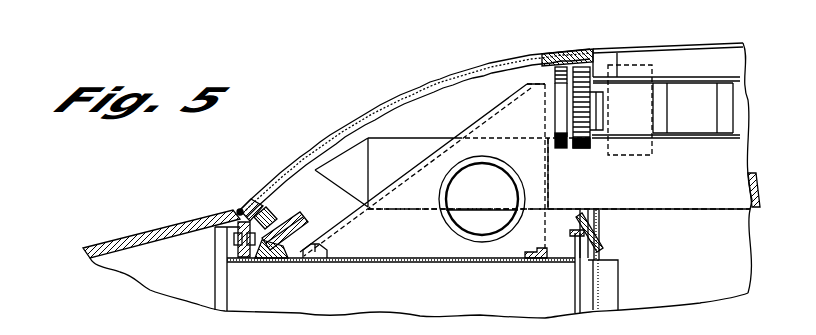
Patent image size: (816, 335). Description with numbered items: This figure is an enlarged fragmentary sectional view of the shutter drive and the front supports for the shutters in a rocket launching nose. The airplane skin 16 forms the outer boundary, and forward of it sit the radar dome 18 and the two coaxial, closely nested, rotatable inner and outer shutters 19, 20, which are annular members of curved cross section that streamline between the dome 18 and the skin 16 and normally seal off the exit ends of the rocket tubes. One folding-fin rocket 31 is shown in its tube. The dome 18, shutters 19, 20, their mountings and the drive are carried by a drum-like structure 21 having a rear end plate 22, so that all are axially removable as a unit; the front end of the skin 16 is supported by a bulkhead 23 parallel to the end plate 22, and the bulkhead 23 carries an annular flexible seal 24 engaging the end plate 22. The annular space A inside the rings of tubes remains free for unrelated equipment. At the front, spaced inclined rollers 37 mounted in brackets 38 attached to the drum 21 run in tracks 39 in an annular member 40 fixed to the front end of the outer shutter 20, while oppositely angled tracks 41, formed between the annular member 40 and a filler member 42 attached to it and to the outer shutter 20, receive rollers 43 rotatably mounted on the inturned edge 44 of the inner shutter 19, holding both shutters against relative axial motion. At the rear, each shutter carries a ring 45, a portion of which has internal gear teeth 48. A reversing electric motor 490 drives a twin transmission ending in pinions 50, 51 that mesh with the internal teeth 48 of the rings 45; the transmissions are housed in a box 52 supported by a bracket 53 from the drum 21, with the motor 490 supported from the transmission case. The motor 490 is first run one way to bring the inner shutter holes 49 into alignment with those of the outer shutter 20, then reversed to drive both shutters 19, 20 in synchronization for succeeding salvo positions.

The airplane skin 16 is at (683, 44).
The radar dome 18 is at (132, 238).
The inner shutter 19 is at (421, 96).
The outer shutter 20 is at (405, 96).
The drum-like structure 21 is at (490, 298).
The rear end plate 22 is at (573, 283).
The bulkhead 23 is at (600, 222).
The annular flexible seal 24 is at (598, 250).
The rocket 31 is at (352, 170).
The inclined roller 37 is at (294, 226).
The bracket 38 is at (301, 248).
The track 39 is at (281, 250).
The annular member 40 is at (276, 252).
The oppositely angled track 41 is at (258, 250).
The filler member 42 is at (240, 212).
The roller 43 is at (261, 220).
The inturned edge 44 is at (245, 214).
The ring 45 is at (580, 52).
The internal gear teeth 48 is at (570, 52).
The inner shutter holes 49 is at (350, 122).
The pinion 50 is at (552, 77).
The pinion 51 is at (583, 88).
The box 52 is at (632, 125).
The bracket 53 is at (417, 242).
The reversing electric motor 490 is at (688, 125).
The annular space A is at (608, 275).